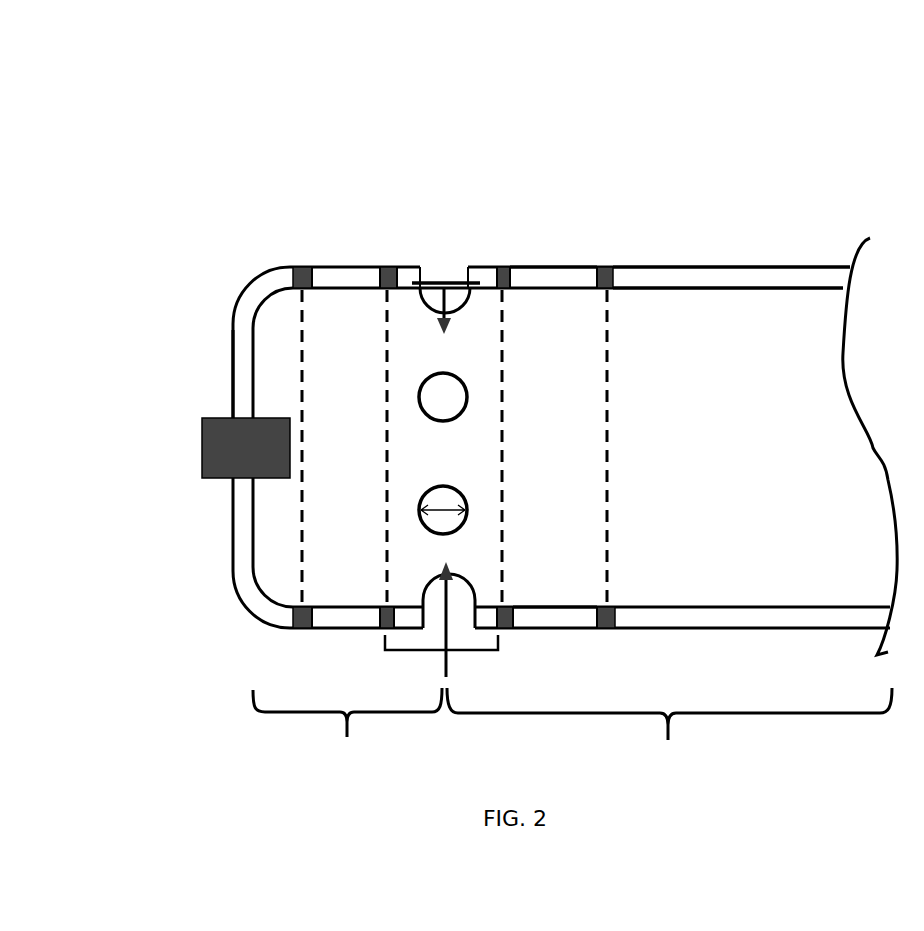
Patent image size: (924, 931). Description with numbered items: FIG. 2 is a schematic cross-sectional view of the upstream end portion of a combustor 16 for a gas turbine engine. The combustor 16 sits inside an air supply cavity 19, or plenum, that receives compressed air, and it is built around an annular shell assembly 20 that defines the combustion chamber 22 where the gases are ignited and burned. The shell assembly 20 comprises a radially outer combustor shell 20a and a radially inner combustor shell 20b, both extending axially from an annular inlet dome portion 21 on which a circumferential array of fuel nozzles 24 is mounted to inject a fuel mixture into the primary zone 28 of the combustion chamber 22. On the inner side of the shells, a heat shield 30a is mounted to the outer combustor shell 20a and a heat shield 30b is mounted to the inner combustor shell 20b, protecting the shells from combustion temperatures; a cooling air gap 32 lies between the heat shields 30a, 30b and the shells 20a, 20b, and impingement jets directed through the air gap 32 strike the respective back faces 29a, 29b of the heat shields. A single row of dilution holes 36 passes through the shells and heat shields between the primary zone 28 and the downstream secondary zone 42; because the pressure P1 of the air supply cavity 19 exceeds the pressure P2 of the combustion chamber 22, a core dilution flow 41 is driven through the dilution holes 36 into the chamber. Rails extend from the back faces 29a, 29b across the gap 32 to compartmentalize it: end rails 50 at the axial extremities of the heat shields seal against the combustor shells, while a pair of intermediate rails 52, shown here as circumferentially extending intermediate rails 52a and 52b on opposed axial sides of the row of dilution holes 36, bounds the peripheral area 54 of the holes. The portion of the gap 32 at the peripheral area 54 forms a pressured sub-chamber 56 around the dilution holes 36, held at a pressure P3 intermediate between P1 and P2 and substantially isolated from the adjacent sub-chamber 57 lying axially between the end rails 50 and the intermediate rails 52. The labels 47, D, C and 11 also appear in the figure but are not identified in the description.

The combustor 16 is at (148, 144).
The annular shell assembly 20 is at (264, 235).
The annular inlet dome portion 21 is at (238, 365).
The fuel nozzle 24 is at (202, 437).
The air supply cavity 19 is at (641, 121).
The radially outer combustor shell 20a is at (767, 265).
The radially inner combustor shell 20b is at (760, 627).
The cooling air gap 32 is at (731, 281).
The end rail 50 is at (307, 265).
The intermediate rail 52a is at (385, 277).
The intermediate rail 52b is at (502, 280).
The sub-chamber 57 is at (355, 278).
The pressured sub-chamber 56 is at (405, 278).
The plate 47 is at (429, 265).
The dilution hole 36 is at (443, 258).
The heat shield 30a is at (527, 283).
The heat shield 30b is at (572, 610).
The back face 29a is at (582, 283).
The back face 29b is at (552, 610).
The core dilution flow 41 is at (467, 482).
The intermediate rail 52 is at (522, 368).
The combustion chamber 22 is at (618, 533).
The diameter D is at (443, 524).
The clearance C is at (473, 633).
The pressure of air supply cavity P1 is at (659, 237).
The pressure of combustion chamber P2 is at (734, 377).
The pressure of sub-chamber P3 is at (407, 616).
The peripheral area 54 is at (428, 694).
The primary zone 28 is at (342, 734).
The secondary zone 42 is at (675, 735).
The sheet reference 11 is at (843, 830).